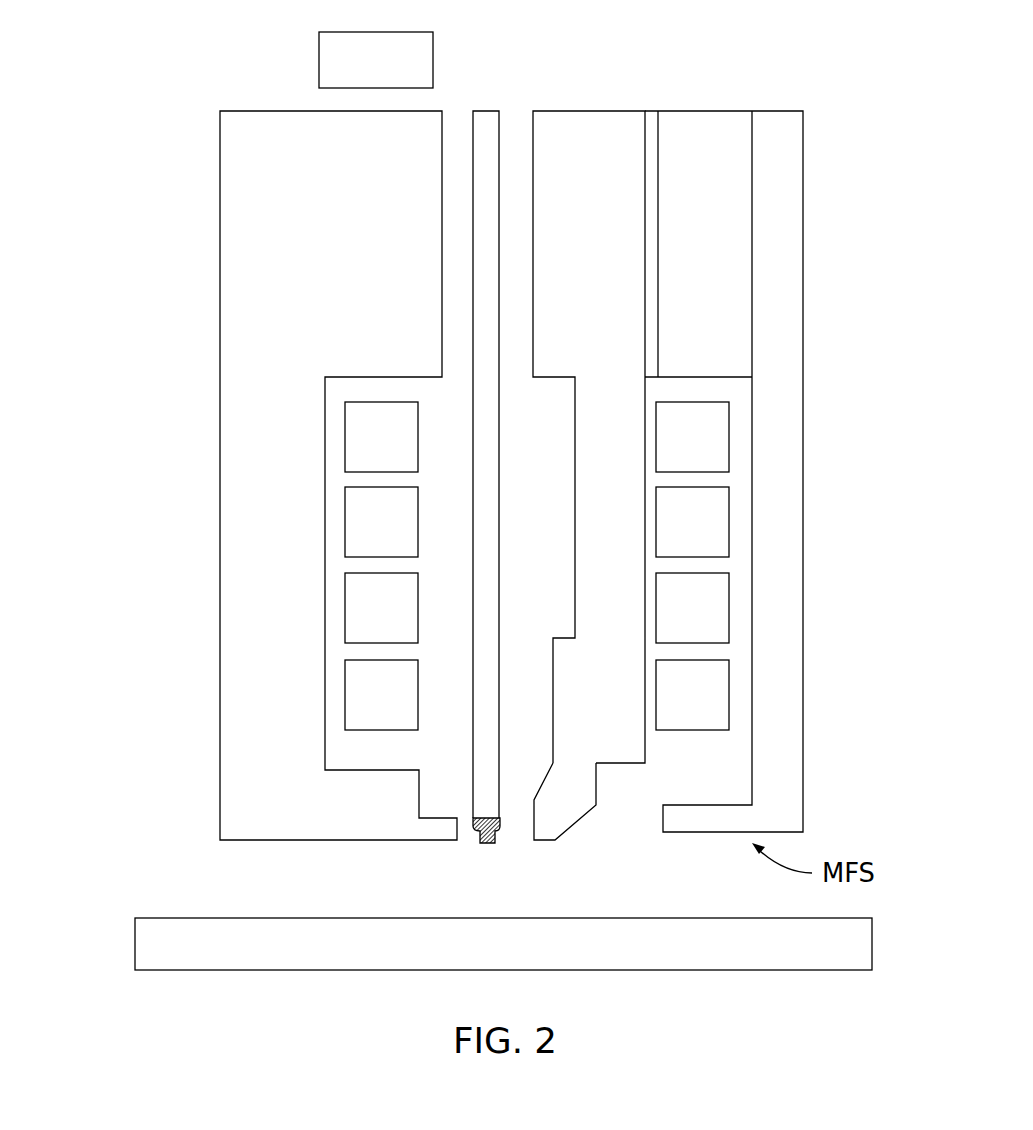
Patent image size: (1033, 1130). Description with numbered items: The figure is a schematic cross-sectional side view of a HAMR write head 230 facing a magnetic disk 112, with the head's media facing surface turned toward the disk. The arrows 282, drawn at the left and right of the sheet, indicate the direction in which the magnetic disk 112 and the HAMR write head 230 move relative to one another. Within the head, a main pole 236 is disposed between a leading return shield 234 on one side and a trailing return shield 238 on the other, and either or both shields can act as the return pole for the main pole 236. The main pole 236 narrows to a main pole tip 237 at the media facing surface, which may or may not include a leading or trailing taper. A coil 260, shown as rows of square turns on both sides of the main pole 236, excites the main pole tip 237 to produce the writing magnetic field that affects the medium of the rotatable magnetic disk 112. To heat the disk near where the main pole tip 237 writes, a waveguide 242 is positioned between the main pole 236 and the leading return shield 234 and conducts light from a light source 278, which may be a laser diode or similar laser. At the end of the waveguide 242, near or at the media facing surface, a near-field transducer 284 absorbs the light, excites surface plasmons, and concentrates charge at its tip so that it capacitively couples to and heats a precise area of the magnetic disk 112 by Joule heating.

The HAMR write head 230 is at (158, 46).
The light source 278 is at (483, 104).
The leading return shield 234 is at (285, 538).
The waveguide 242 is at (486, 272).
The near-field transducer 284 is at (486, 846).
The main pole 236 is at (631, 543).
The main pole tip 237 is at (563, 807).
The trailing return shield 238 is at (778, 525).
The coil 260 is at (396, 452).
The arrows 282 is at (920, 300).
The magnetic disk 112 is at (515, 958).